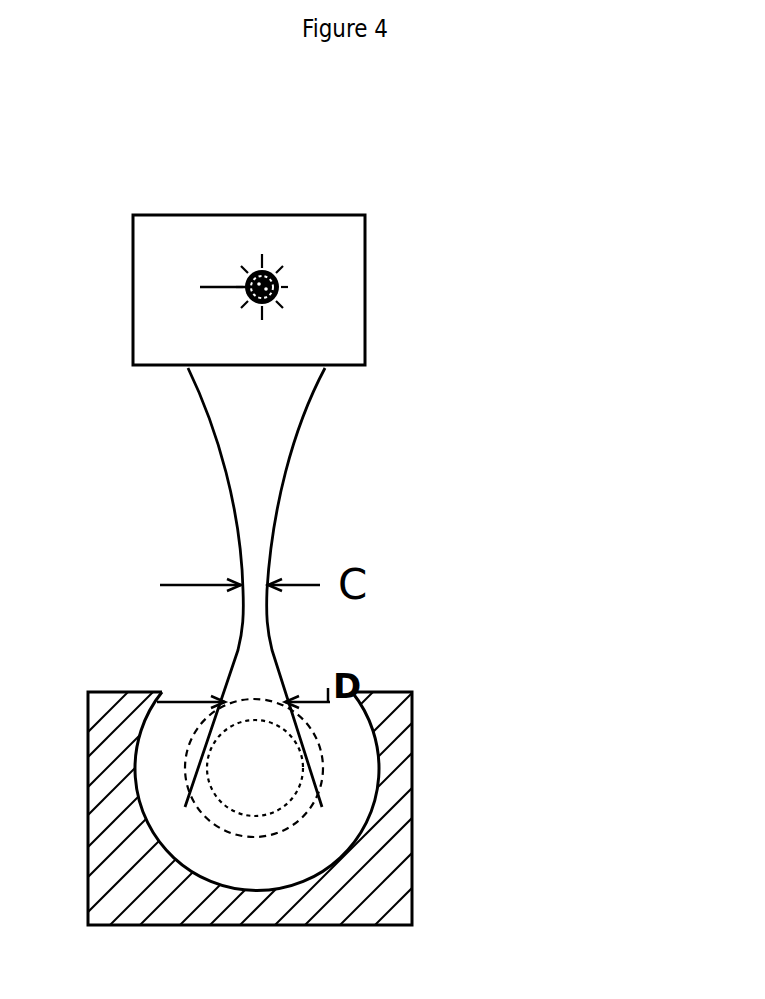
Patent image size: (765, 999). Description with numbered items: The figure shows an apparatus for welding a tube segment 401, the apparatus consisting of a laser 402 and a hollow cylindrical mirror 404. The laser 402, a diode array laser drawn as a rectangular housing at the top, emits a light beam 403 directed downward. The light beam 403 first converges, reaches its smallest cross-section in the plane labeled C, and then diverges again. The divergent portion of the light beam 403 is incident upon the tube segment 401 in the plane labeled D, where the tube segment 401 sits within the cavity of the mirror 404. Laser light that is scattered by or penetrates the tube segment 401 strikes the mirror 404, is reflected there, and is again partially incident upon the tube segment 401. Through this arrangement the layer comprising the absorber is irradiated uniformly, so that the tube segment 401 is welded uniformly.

The tube segment 401 is at (322, 753).
The laser 402 is at (365, 278).
The light beam 403 is at (286, 458).
The mirror 404 is at (352, 847).